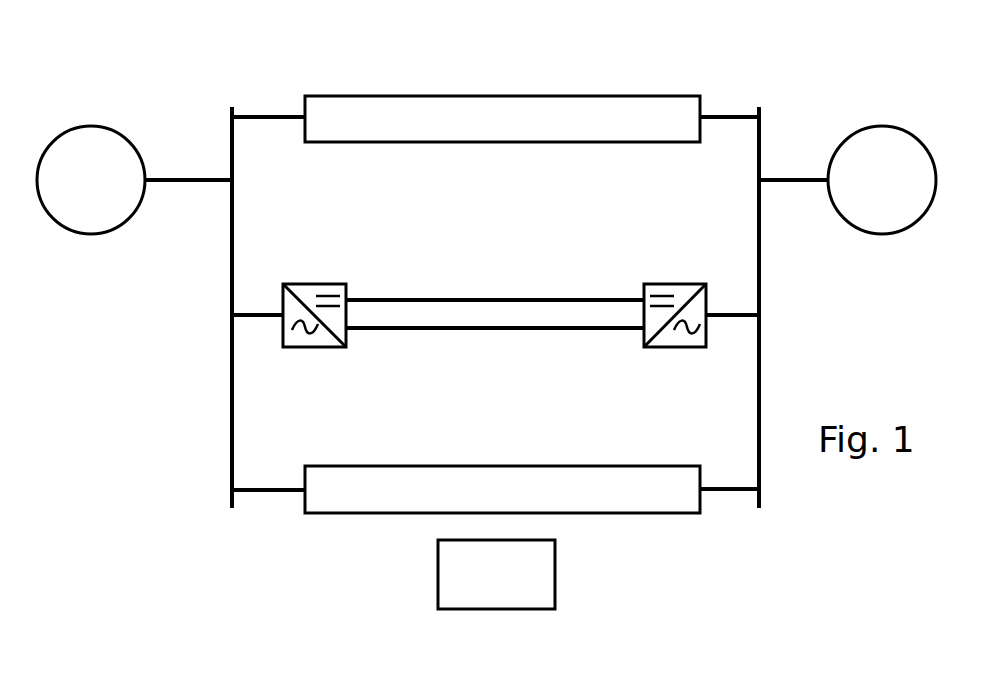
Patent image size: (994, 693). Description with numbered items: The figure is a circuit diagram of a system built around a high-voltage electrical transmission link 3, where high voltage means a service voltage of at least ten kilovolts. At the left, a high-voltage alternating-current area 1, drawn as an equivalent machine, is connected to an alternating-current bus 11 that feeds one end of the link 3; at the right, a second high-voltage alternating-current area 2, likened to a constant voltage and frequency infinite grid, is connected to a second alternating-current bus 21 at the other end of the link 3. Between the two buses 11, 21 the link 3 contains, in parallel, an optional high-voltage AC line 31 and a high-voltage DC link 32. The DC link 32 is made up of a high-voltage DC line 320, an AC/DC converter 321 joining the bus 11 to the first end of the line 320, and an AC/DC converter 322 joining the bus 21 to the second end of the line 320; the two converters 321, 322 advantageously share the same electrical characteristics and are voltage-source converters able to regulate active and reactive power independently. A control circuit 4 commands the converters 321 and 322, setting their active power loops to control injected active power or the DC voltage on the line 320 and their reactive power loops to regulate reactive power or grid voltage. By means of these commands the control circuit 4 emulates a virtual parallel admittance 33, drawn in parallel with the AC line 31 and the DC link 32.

The high-voltage alternating-current area 1 is at (87, 114).
The high-voltage alternating-current area 2 is at (870, 104).
The high-voltage link 3 is at (331, 78).
The control circuit 4 is at (488, 588).
The alternating-current bus 11 is at (232, 180).
The alternating-current bus 21 is at (760, 180).
The high-voltage AC line 31 is at (502, 93).
The high-voltage DC link 32 is at (502, 273).
The virtual parallel admittance 33 is at (502, 463).
The high-voltage DC line 320 is at (448, 297).
The AC/DC converter 321 is at (316, 348).
The AC/DC converter 322 is at (675, 348).